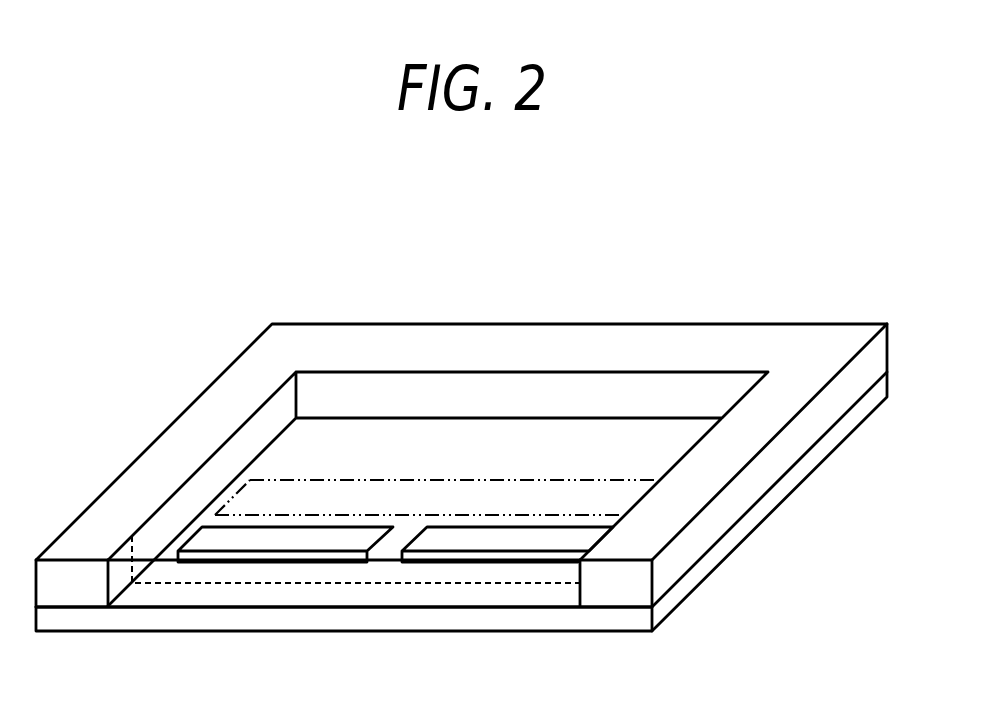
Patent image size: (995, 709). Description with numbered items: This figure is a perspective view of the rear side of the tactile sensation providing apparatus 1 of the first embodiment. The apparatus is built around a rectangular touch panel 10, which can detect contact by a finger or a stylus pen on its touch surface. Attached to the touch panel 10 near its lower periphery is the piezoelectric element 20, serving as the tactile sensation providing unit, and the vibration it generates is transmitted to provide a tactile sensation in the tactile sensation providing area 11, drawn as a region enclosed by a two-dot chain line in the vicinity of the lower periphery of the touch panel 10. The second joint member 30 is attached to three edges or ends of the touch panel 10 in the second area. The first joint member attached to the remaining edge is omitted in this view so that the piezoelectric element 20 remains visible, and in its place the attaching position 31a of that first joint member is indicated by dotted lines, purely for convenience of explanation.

The tactile sensation providing apparatus 1 is at (637, 284).
The touch panel 10 is at (287, 620).
The tactile sensation providing area 11 is at (450, 480).
The piezoelectric element 20 is at (247, 557).
The second joint member 30 is at (187, 428).
The attaching position 31a is at (381, 583).